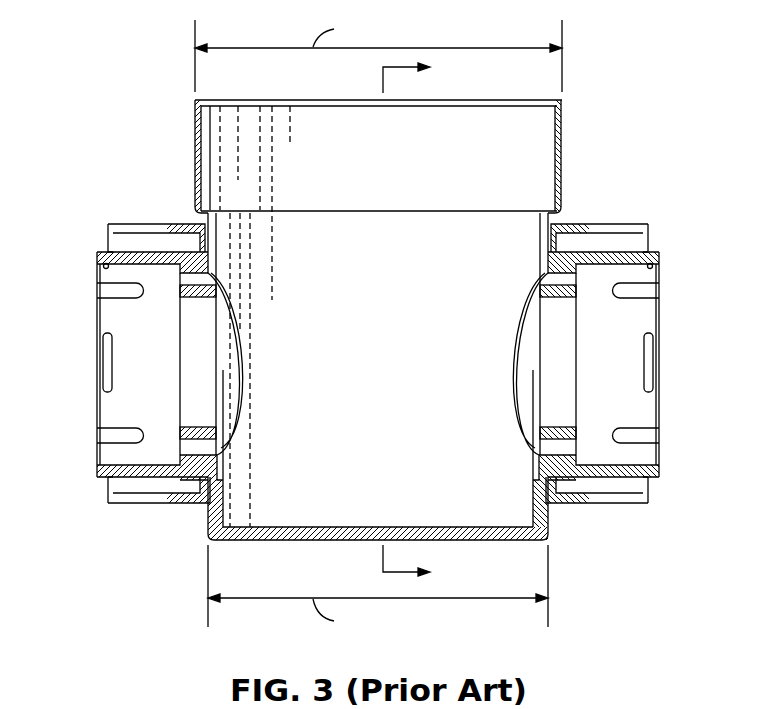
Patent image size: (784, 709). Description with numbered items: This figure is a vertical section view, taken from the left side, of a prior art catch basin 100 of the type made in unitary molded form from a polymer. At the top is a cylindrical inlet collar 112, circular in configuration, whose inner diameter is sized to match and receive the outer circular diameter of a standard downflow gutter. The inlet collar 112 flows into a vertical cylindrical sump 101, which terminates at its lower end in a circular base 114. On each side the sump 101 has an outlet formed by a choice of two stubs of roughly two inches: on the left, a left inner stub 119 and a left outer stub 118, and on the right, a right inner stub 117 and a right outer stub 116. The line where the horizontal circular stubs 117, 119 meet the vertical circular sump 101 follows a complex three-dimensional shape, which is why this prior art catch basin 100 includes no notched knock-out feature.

The catch basin 100 is at (612, 68).
The cylindrical sump 101 is at (255, 472).
The cylindrical inlet collar 112 is at (533, 145).
The circular base 114 is at (550, 533).
The right outer stub 116 is at (622, 223).
The right inner stub 117 is at (652, 261).
The left outer stub 118 is at (127, 224).
The left inner stub 119 is at (107, 266).